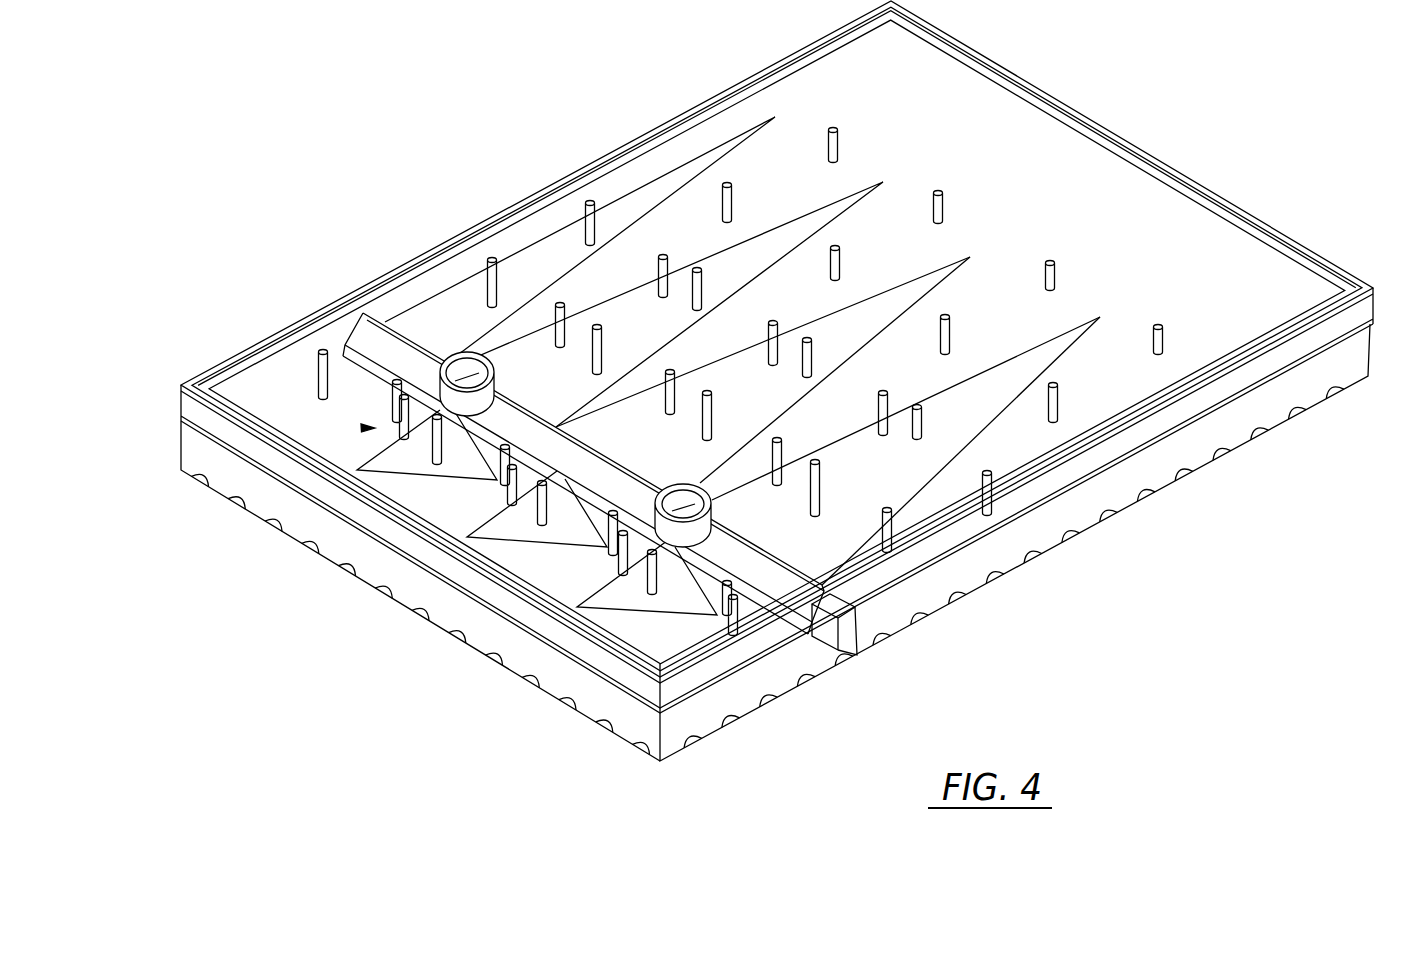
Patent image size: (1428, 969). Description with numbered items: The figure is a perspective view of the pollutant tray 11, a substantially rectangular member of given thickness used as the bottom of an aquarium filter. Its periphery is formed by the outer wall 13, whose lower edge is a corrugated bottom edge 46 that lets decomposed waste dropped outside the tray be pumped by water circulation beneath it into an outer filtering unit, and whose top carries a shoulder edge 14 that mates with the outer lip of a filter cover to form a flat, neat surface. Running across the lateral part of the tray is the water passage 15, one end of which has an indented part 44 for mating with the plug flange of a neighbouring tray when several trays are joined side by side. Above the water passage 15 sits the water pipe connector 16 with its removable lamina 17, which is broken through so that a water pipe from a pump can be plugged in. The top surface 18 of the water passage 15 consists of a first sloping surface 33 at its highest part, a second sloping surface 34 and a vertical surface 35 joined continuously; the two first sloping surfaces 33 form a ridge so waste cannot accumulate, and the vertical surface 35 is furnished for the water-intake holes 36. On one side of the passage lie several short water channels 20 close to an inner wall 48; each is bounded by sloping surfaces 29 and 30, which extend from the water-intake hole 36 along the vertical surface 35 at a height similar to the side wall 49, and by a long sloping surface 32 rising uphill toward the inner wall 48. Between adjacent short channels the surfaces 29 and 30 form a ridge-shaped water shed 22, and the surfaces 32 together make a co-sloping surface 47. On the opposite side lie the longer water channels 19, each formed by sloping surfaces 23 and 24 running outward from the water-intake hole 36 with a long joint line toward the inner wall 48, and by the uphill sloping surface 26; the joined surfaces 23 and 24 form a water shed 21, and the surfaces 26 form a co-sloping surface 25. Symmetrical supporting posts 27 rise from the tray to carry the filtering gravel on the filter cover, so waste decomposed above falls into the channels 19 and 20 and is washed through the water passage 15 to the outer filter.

The pollutant tray 11 is at (761, 414).
The outer wall 13 is at (1140, 480).
The shoulder edge 14 is at (1357, 333).
The water passage 15 is at (832, 645).
The water pipe connector 16 is at (457, 370).
The removable lamina 17 is at (435, 352).
The top surface 18 is at (358, 335).
The long water channel 19 is at (543, 302).
The short water channel 20 is at (373, 428).
The water shed 21 is at (845, 330).
The water shed 22 is at (297, 487).
The sloping surface 23 is at (875, 307).
The sloping surface 24 is at (773, 253).
The co-sloping surface 25 is at (1035, 140).
The sloping surface 26 is at (990, 330).
The supporting post 27 is at (1060, 266).
The sloping surface 29 is at (527, 530).
The sloping surface 30 is at (497, 558).
The sloping surface 32 is at (567, 567).
The first sloping surface 33 is at (563, 453).
The second sloping surface 34 is at (530, 453).
The vertical surface 35 is at (605, 518).
The water-intake hole 36 is at (660, 670).
The indented part 44 is at (860, 655).
The corrugated bottom edge 46 is at (1293, 412).
The co-sloping surface 47 is at (378, 490).
The inner wall 48 is at (1118, 138).
The side wall 49 is at (620, 172).